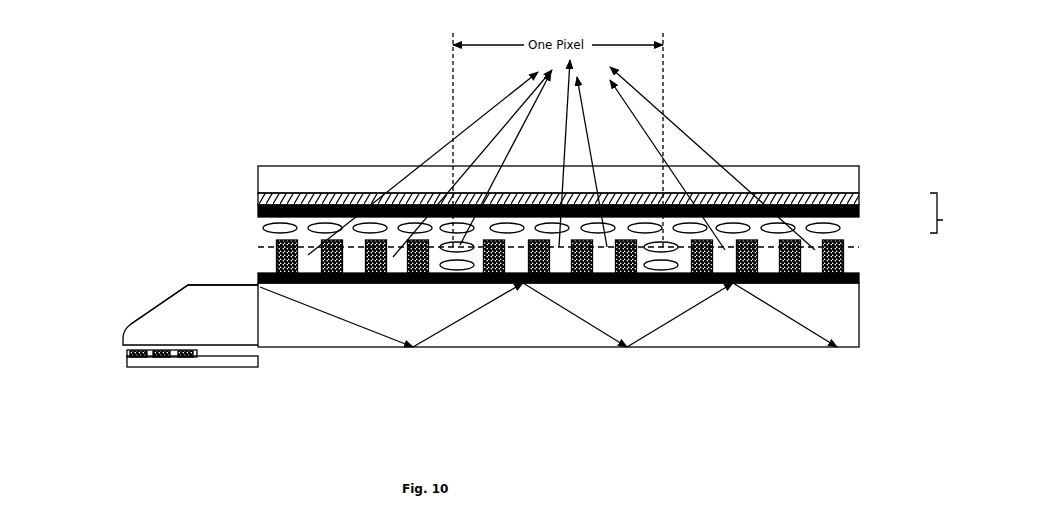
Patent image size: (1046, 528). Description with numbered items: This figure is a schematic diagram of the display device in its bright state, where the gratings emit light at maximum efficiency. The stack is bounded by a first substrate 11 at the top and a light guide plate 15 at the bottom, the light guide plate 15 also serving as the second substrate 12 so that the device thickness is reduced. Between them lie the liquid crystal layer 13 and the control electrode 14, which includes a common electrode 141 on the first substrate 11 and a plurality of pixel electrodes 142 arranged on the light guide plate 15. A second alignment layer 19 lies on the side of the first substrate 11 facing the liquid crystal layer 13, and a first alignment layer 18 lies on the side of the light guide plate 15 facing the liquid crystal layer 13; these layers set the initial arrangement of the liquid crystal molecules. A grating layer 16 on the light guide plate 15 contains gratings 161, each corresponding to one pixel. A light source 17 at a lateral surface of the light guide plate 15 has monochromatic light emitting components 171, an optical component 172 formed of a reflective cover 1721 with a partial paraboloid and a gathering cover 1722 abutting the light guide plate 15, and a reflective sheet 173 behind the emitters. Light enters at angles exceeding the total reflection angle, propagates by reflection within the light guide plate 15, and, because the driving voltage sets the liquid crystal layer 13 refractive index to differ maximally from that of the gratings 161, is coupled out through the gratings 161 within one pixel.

The first substrate 11 is at (860, 179).
The common electrode 141 is at (860, 202).
The pixel electrodes 142 is at (830, 245).
The control electrode 14 is at (946, 213).
The second alignment layer 19 is at (258, 205).
The gratings 161 is at (527, 193).
The grating layer 16 is at (276, 256).
The liquid crystal layer 13 is at (852, 262).
The first alignment layer 18 is at (258, 274).
The light guide plate 15 is at (595, 315).
The second substrate 12 is at (840, 320).
The light source 17 is at (164, 318).
The monochromatic light emitting components 171 is at (186, 358).
The optical component 172 is at (190, 290).
The reflective cover 1721 is at (160, 304).
The gathering cover 1722 is at (217, 285).
The reflective sheet 173 is at (228, 367).